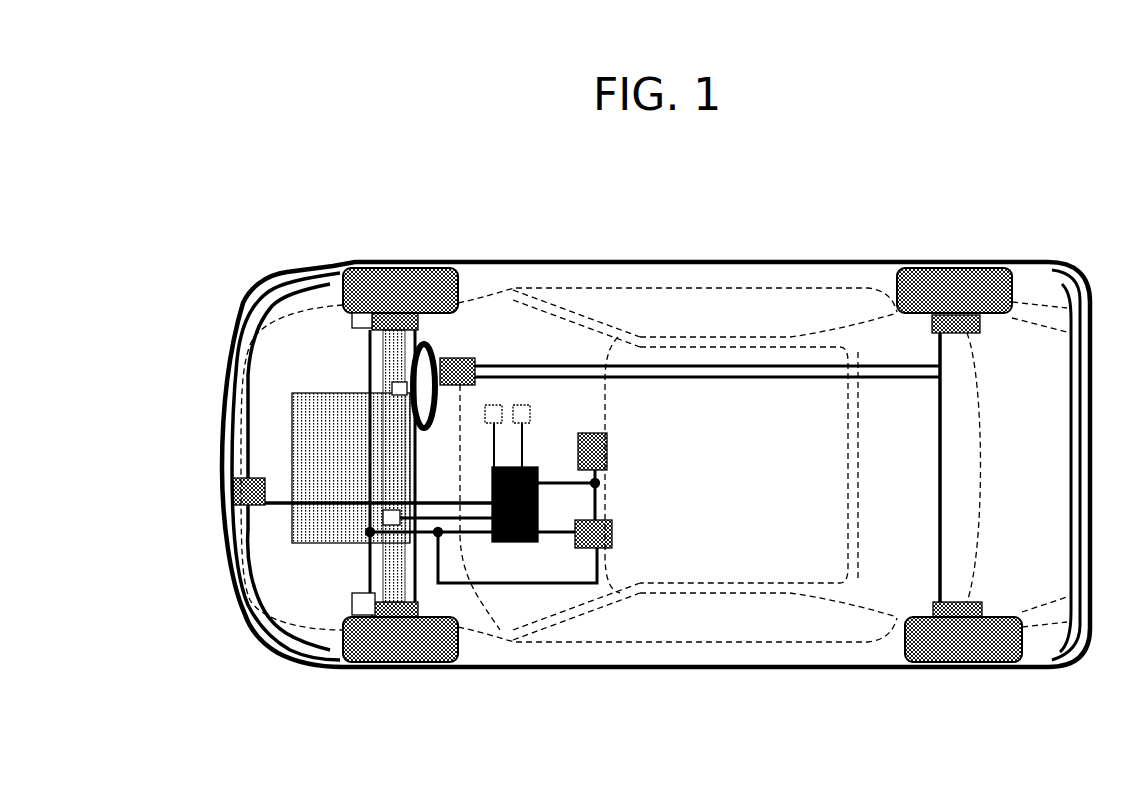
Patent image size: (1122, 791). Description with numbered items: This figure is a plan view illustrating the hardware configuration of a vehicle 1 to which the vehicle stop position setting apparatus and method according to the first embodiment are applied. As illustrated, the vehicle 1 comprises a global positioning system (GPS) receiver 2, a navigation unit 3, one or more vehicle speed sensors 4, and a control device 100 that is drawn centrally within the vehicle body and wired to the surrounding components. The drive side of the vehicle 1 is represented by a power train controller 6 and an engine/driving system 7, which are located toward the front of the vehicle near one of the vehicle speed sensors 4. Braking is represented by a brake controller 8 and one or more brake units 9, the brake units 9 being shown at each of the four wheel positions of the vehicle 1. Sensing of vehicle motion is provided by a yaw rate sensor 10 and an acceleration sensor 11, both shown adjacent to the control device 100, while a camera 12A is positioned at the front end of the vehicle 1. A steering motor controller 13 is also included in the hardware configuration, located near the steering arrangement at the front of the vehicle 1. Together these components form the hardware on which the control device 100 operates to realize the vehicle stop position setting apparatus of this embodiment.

The vehicle 1 is at (832, 252).
The global positioning system (GPS) receiver 2 is at (593, 433).
The navigation unit 3 is at (612, 535).
The vehicle speed sensor 4 is at (347, 310).
The power train controller 6 is at (383, 517).
The engine/driving system 7 is at (292, 448).
The brake controller 8 is at (462, 358).
The brake unit 9 is at (458, 305).
The yaw rate sensor 10 is at (494, 405).
The acceleration sensor 11 is at (522, 405).
The camera 12A is at (232, 492).
The steering motor controller 13 is at (392, 388).
The control device 100 is at (515, 543).